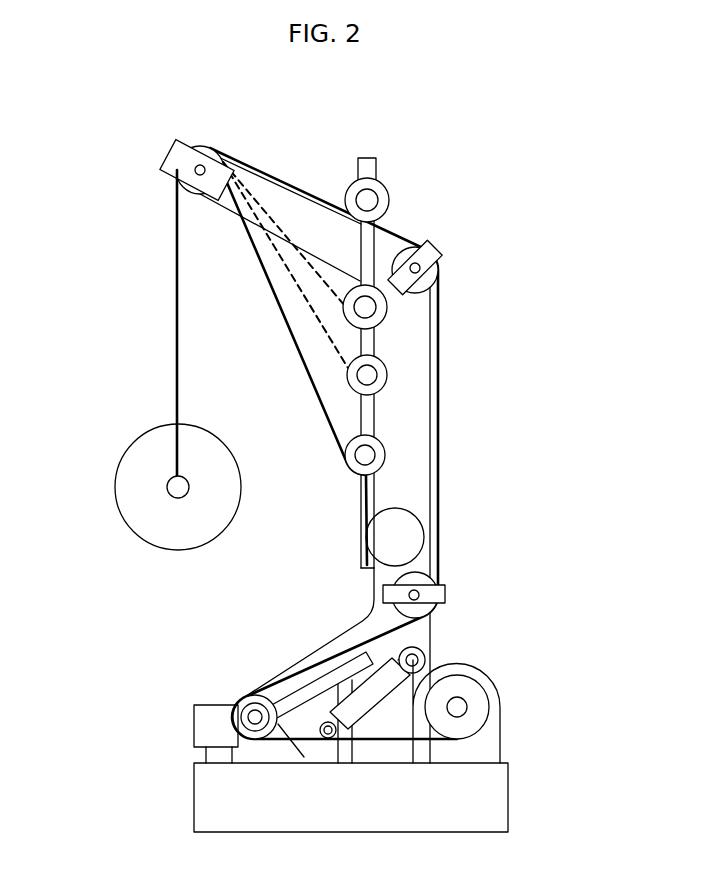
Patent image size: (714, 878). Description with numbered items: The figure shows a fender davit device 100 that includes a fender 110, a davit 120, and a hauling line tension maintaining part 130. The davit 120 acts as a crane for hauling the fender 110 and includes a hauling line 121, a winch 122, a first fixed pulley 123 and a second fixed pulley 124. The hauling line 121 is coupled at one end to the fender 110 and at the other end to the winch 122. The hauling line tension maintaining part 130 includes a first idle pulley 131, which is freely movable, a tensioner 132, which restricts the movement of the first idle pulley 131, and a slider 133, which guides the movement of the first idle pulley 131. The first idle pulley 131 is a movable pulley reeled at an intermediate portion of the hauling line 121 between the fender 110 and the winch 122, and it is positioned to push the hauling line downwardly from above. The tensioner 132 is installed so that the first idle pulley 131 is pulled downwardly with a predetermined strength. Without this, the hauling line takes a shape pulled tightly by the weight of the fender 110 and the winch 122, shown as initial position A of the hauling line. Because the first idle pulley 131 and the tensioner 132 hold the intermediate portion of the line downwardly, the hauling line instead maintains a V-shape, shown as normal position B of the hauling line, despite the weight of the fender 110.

The fender davit device 100 is at (650, 88).
The fender 110 is at (114, 487).
The davit 120 is at (320, 647).
The hauling line 121 is at (176, 323).
The winch 122 is at (485, 707).
The first fixed pulley 123 is at (204, 147).
The second fixed pulley 124 is at (438, 268).
The hauling line tension maintaining part 130 is at (399, 441).
The first idle pulley 131 is at (377, 457).
The tensioner 132 is at (418, 530).
The slider 133 is at (372, 410).
The initial position of the hauling line A is at (300, 187).
The normal position of the hauling line B is at (303, 376).